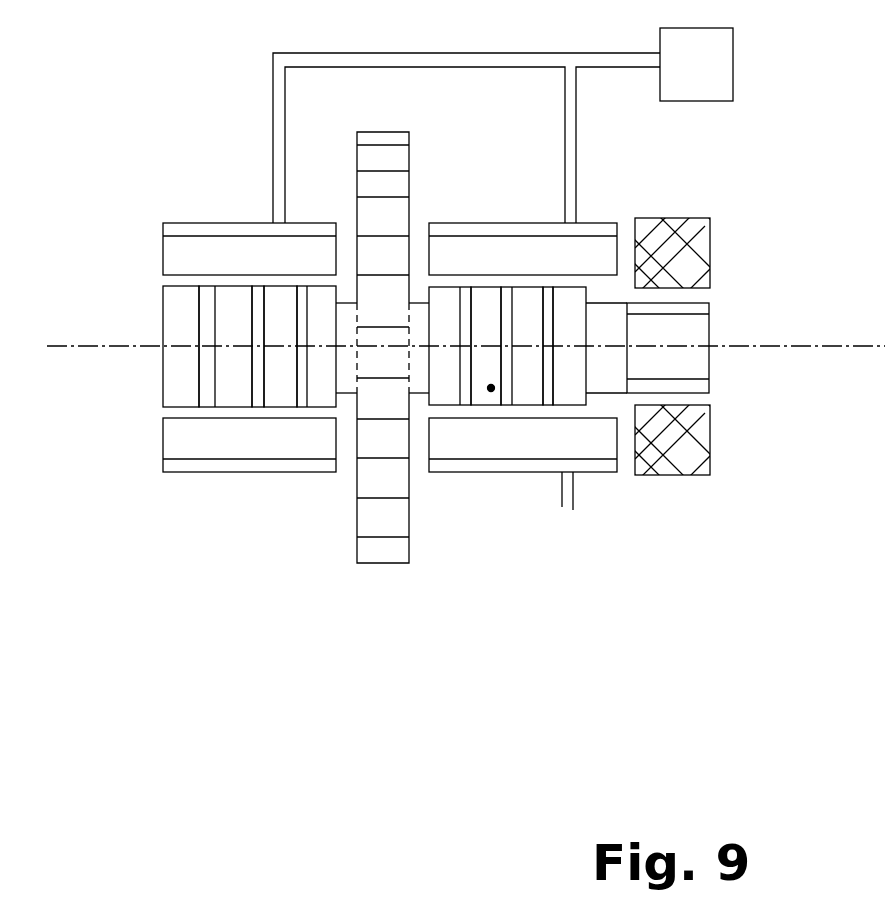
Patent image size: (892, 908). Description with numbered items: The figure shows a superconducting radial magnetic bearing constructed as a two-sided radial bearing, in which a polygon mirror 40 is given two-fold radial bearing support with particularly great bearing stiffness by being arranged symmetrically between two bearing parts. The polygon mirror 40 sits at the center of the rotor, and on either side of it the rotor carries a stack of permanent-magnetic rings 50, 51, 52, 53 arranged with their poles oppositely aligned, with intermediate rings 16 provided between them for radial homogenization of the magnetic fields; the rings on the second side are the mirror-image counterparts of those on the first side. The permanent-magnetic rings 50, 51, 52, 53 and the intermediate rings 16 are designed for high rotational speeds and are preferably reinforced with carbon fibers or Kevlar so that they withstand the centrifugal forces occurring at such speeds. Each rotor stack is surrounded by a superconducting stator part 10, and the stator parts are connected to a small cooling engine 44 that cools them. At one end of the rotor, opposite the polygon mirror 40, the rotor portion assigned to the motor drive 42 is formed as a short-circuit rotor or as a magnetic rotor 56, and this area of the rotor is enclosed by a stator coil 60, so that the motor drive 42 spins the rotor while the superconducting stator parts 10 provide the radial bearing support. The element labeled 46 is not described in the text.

The superconducting stator part 10 is at (525, 212).
The intermediate rings 16 is at (544, 387).
The polygon mirror 40 is at (385, 437).
The motor drive 42 is at (693, 487).
The cooling engine 44 is at (710, 67).
The bearing housing 46 is at (690, 331).
The permanent-magnetic ring 50 is at (445, 386).
The permanent-magnetic ring 51 is at (491, 388).
The permanent-magnetic ring 52 is at (524, 392).
The permanent-magnetic ring 53 is at (573, 387).
The magnetic rotor 56 is at (690, 386).
The stator coil 60 is at (695, 448).